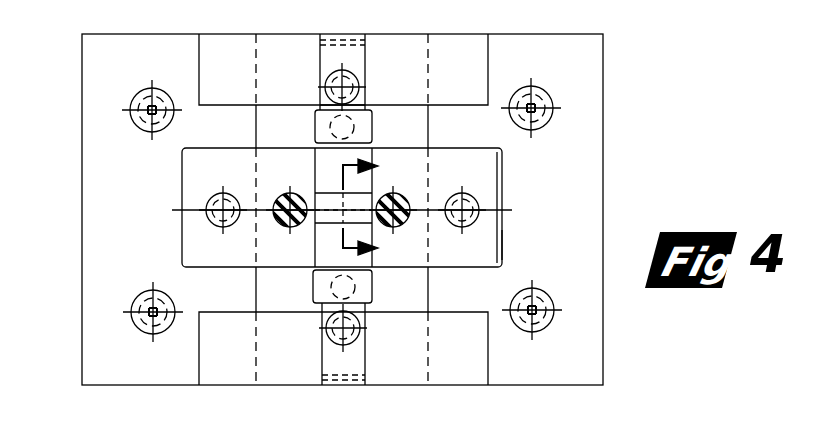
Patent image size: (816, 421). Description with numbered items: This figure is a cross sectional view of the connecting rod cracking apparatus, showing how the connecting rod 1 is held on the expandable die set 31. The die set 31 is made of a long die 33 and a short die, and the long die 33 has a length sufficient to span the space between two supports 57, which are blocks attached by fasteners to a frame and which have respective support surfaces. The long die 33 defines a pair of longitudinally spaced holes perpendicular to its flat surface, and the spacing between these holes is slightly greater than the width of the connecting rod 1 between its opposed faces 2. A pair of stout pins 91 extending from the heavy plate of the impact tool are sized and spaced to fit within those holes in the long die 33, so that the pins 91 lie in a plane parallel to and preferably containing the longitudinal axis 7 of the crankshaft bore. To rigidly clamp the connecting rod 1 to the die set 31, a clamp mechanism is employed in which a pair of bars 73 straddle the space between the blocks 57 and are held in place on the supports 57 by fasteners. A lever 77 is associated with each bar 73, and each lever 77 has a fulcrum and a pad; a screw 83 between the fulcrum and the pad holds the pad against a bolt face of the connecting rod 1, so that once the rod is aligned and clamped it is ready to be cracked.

The connecting rod 1 is at (385, 132).
The opposed faces 2 is at (313, 285).
The longitudinal axis of the crankshaft bore 7 is at (349, 208).
The expandable die set 31 is at (510, 180).
The long die 33 is at (512, 243).
The supports 57 is at (90, 170).
The bars 73 is at (300, 376).
The lever 77 is at (345, 382).
The screw 83 is at (355, 335).
The pins 91 is at (298, 193).